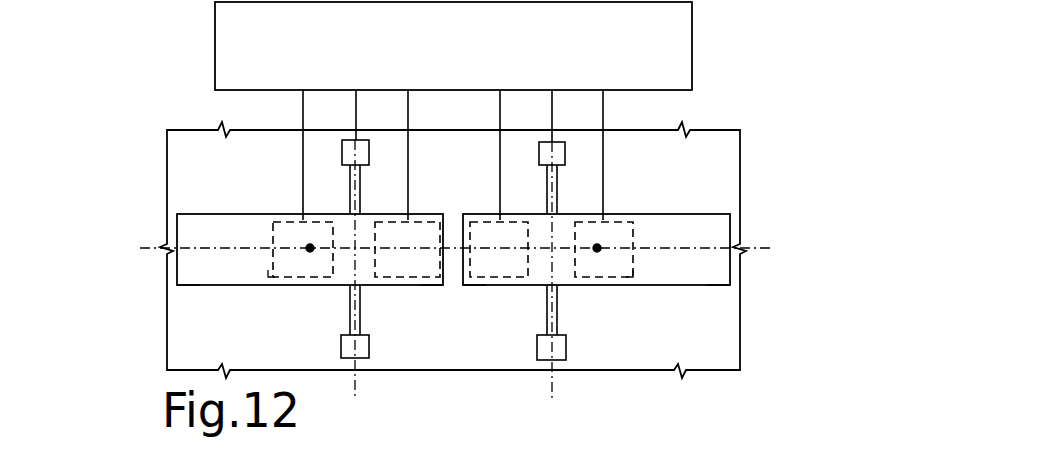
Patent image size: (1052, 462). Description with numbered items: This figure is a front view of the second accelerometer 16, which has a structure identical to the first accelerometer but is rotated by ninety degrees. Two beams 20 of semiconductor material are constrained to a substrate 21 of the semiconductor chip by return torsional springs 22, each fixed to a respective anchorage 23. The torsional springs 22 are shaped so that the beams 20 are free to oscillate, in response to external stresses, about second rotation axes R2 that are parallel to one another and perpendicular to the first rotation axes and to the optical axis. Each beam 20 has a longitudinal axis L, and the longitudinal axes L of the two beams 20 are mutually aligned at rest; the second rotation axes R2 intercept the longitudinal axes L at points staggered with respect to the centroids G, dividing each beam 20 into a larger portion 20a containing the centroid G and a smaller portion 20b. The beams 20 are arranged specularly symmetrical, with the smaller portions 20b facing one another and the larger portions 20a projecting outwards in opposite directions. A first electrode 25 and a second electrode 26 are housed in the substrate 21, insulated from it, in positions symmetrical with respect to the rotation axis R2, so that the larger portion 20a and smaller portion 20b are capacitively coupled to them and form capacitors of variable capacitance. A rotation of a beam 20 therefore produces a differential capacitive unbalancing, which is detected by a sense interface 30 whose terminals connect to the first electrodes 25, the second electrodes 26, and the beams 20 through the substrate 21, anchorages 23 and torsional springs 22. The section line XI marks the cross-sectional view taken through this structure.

The second accelerometer 16 is at (732, 80).
The beam 20 is at (267, 204).
The larger portion 20a is at (190, 289).
The smaller portion 20b is at (495, 288).
The substrate 21 is at (167, 150).
The torsional spring 22 is at (360, 208).
The anchorage 23 is at (343, 155).
The first electrode 25 is at (268, 278).
The second electrode 26 is at (490, 225).
The sense interface 30 is at (222, 35).
The centroid G is at (309, 252).
The longitudinal axis L is at (164, 248).
The section line XI is at (122, 250).
The second rotation axis R2 is at (355, 392).